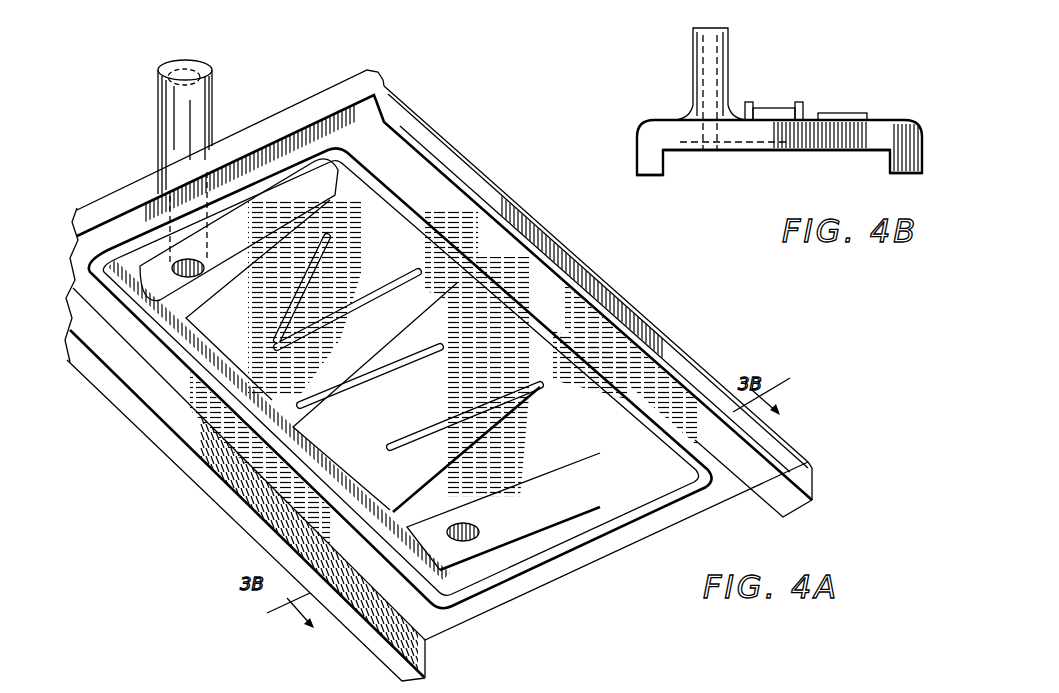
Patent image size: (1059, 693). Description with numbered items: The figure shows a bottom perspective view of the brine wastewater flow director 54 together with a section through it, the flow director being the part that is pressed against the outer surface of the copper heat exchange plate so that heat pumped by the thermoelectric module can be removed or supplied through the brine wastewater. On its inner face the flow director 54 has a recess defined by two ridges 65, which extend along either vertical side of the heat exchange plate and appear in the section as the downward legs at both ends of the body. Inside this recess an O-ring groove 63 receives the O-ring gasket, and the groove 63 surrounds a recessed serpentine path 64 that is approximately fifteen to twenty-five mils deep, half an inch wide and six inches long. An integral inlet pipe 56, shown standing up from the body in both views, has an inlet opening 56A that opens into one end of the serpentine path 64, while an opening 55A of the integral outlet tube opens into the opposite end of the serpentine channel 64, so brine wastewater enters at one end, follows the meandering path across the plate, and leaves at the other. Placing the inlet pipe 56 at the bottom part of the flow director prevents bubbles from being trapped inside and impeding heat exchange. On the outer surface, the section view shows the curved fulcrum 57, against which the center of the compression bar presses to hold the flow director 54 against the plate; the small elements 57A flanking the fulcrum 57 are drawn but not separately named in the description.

In FIG. 4A, the water flow director 54 is at (681, 343).
In FIG. 4B, the water flow director 54 is at (637, 136).
In FIG. 4A, the opening 55A is at (480, 533).
In FIG. 4A, the inlet pipe 56 is at (212, 106).
In FIG. 4B, the inlet pipe 56 is at (693, 58).
In FIG. 4A, the inlet opening 56A is at (232, 255).
In FIG. 4B, the inlet opening 56A is at (710, 140).
In FIG. 4B, the curved fulcrum 57 is at (772, 107).
In FIG. 4B, the retaining post 57A is at (747, 100).
In FIG. 4A, the O-ring groove 63 is at (699, 484).
In FIG. 4A, the serpentine path 64 is at (436, 405).
In FIG. 4B, the serpentine path 64 is at (790, 152).
In FIG. 4A, the ridges 65 is at (793, 500).
In FIG. 4B, the ridges 65 is at (650, 178).